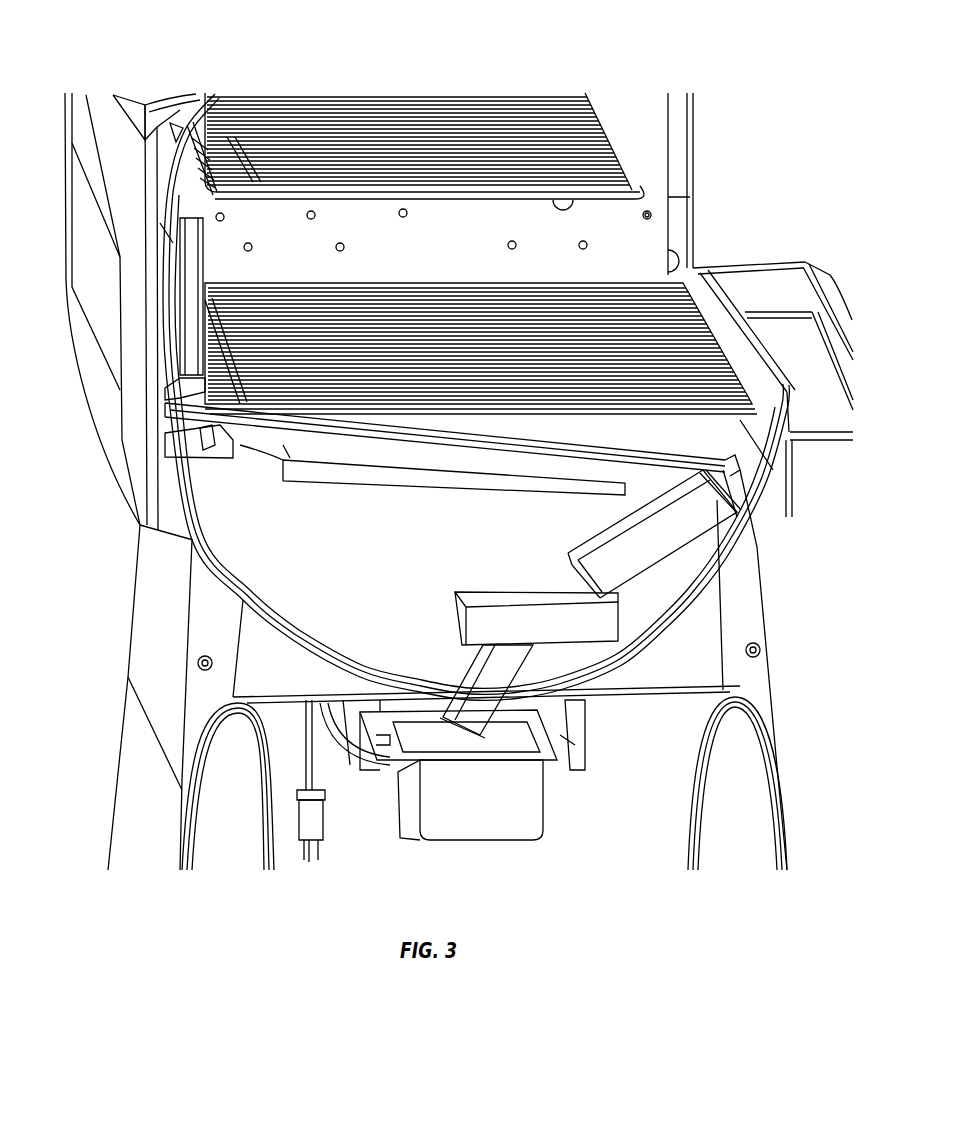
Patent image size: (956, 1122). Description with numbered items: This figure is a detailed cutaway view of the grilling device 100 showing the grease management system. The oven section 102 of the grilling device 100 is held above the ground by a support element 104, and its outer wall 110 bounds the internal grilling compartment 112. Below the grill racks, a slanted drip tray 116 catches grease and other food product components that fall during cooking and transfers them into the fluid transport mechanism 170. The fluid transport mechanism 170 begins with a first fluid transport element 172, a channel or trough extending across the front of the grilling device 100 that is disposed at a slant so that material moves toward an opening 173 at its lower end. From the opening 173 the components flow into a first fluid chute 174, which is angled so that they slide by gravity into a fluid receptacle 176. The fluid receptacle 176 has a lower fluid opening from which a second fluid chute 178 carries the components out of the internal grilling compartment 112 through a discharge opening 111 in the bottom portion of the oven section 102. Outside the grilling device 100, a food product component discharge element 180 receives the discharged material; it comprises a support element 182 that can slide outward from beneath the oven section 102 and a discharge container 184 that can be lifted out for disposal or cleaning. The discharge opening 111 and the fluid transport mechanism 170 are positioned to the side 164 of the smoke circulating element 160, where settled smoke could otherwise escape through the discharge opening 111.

The grilling device 100 is at (113, 43).
The oven section 102 is at (165, 82).
The support element 104 is at (125, 732).
The outer wall 110 is at (107, 384).
The discharge opening 111 is at (458, 728).
The internal grilling compartment 112 is at (630, 237).
The drip tray 116 is at (667, 440).
The smoke circulating element 160 is at (309, 559).
The side 164 is at (247, 507).
The fluid transport mechanism 170 is at (773, 532).
The first fluid transport element 172 is at (737, 449).
The opening 173 is at (728, 478).
The first fluid chute 174 is at (653, 543).
The fluid receptacle 176 is at (565, 620).
The second fluid chute 178 is at (500, 668).
The food product component discharge element 180 is at (592, 753).
The support element 182 is at (567, 767).
The discharge container 184 is at (515, 833).